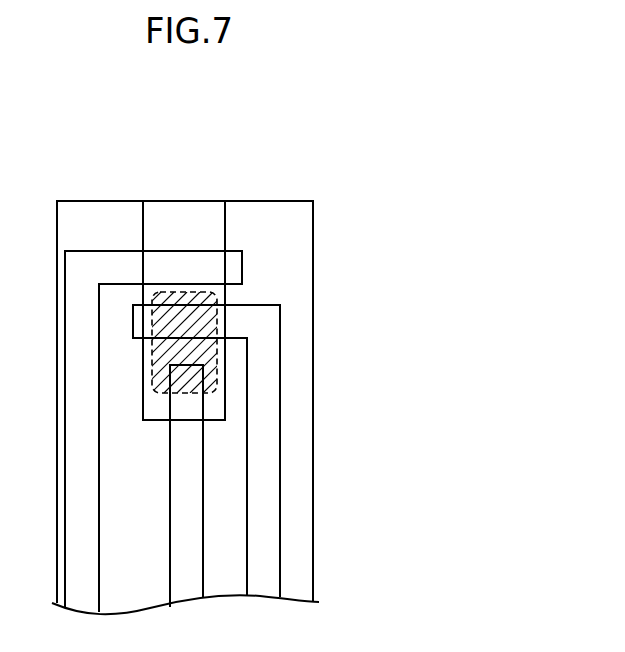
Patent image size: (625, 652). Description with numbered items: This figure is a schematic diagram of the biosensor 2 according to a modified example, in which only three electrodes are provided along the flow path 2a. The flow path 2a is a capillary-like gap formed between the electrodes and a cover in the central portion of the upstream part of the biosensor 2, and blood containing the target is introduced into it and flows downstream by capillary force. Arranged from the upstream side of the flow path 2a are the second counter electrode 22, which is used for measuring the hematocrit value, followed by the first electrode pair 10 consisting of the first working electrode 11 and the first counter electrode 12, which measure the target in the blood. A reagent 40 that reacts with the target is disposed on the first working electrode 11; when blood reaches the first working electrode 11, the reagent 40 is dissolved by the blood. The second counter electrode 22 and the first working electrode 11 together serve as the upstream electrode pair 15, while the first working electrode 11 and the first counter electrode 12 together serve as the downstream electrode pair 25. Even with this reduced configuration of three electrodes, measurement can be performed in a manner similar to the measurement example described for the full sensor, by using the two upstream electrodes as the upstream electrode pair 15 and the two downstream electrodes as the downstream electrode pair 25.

The biosensor 2 is at (425, 173).
The flow path 2a is at (145, 226).
The reagent 40 is at (183, 292).
The second counter electrode 22 is at (240, 272).
The first working electrode 11 is at (268, 323).
The first counter electrode 12 is at (190, 438).
The upstream electrode pair 15 is at (254, 431).
The downstream electrode pair 25 is at (341, 460).
The first electrode pair 10 is at (290, 486).